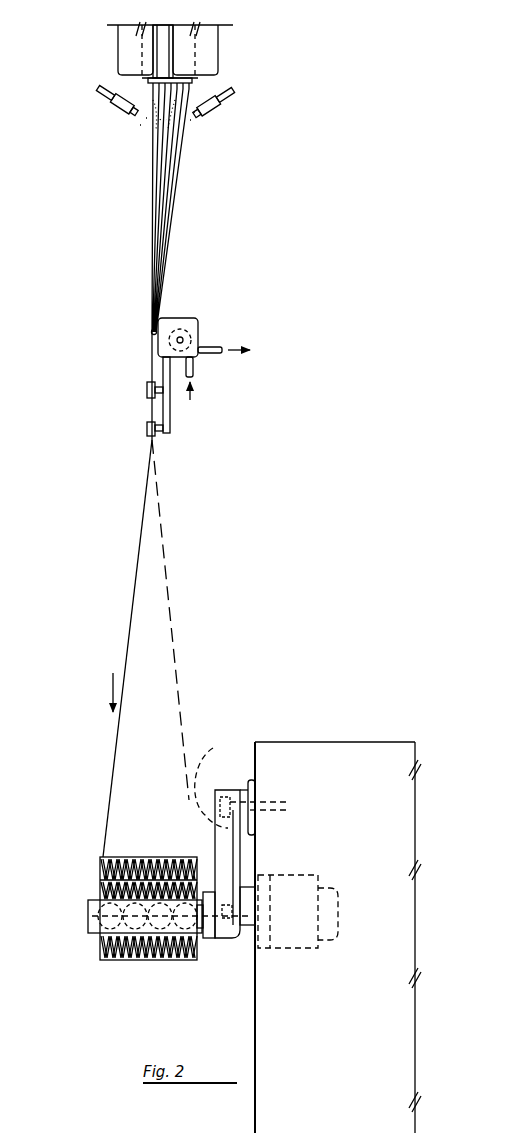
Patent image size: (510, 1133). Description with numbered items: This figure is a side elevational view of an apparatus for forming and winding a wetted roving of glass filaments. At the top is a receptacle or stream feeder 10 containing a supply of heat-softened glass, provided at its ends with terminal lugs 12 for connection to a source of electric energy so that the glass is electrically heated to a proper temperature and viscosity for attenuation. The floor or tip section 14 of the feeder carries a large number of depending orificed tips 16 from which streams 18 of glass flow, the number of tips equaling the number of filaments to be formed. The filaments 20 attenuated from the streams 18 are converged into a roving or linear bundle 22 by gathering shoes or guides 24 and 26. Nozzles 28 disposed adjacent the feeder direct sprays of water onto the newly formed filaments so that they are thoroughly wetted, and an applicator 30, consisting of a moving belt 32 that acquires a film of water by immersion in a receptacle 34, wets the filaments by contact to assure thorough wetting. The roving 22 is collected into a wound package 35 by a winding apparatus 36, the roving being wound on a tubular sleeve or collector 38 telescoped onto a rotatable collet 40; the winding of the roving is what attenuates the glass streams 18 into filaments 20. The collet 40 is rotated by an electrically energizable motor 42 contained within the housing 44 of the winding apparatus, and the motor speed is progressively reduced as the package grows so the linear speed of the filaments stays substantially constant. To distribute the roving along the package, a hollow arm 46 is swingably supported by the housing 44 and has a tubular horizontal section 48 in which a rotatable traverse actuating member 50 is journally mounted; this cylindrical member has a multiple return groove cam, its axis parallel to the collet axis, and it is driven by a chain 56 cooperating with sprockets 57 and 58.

The stream feeder 10 is at (232, 50).
The terminal lugs 12 is at (176, 36).
The floor or tip section 14 is at (192, 85).
The orificed tips 16 is at (148, 83).
The streams 18 is at (170, 92).
The filaments 20 is at (163, 150).
The roving 22 is at (144, 490).
The gathering shoe 24 is at (147, 388).
The gathering shoe 26 is at (147, 428).
The nozzles 28 is at (125, 113).
The applicator 30 is at (194, 316).
The moving belt 32 is at (168, 330).
The receptacle 34 is at (199, 333).
The wound package 35 is at (140, 855).
The winding apparatus 36 is at (393, 740).
The tubular sleeve 38 is at (100, 890).
The winding collet 40 is at (203, 868).
The motor 42 is at (305, 877).
The housing 44 is at (255, 990).
The hollow arm 46 is at (215, 837).
The tubular horizontal section 48 is at (92, 898).
The traverse actuating member 50 is at (92, 918).
The chain 56 is at (212, 750).
The sprocket 57 is at (222, 790).
The sprocket 58 is at (210, 938).